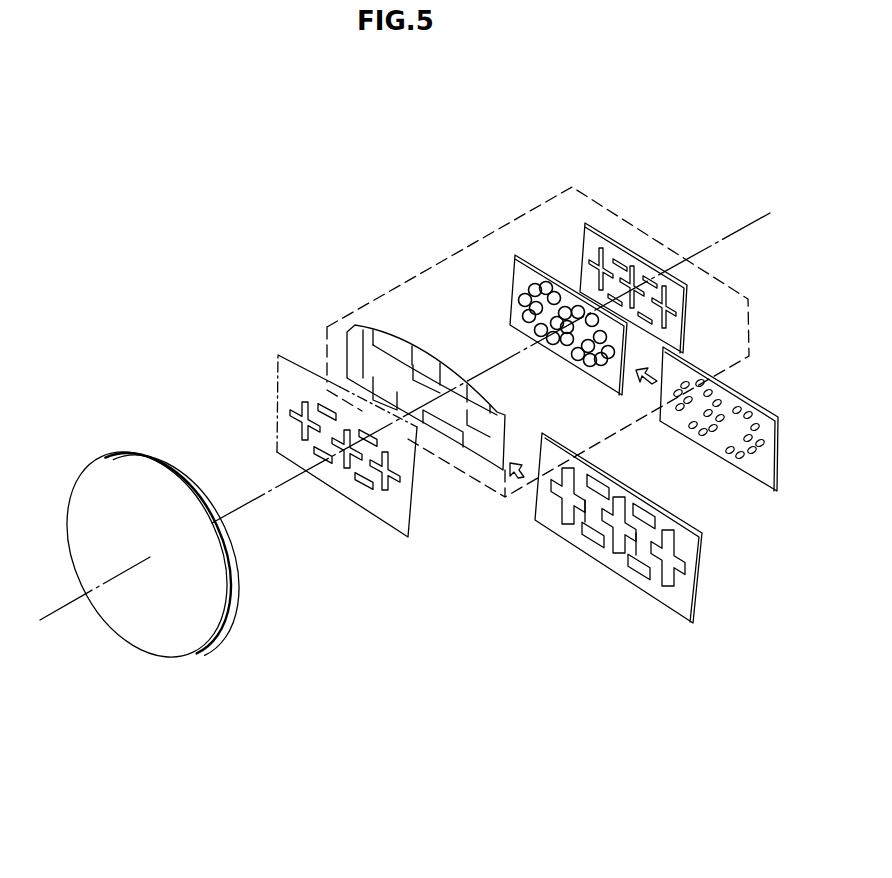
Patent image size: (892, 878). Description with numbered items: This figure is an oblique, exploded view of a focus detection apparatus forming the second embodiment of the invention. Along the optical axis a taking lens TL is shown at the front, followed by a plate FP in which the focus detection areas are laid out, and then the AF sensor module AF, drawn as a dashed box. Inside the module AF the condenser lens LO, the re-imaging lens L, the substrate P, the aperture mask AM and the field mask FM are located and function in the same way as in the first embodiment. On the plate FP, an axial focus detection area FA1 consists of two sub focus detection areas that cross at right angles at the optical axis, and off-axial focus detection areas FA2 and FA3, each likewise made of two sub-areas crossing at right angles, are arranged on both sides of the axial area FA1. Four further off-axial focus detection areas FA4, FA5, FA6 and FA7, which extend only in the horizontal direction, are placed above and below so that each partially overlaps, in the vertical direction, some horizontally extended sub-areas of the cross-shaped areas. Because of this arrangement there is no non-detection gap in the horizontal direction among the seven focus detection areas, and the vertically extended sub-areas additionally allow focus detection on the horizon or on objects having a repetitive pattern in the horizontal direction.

The taking lens TL is at (117, 451).
The field plate with focus detection apertures FP is at (278, 345).
The axial focus detection area FA1 is at (343, 466).
The off-axial focus detection area FA2 is at (292, 414).
The off-axial focus detection area FA3 is at (412, 503).
The off-axial focus detection area FA4 is at (318, 404).
The off-axial focus detection area FA5 is at (314, 454).
The off-axial focus detection area FA6 is at (378, 441).
The off-axial focus detection area FA7 is at (368, 492).
The condenser lens LO is at (434, 362).
The AF sensor module AF is at (524, 207).
The re-imaging lens L is at (515, 255).
The substrate P is at (587, 220).
The aperture mask AM is at (740, 465).
The field mask FM is at (693, 522).